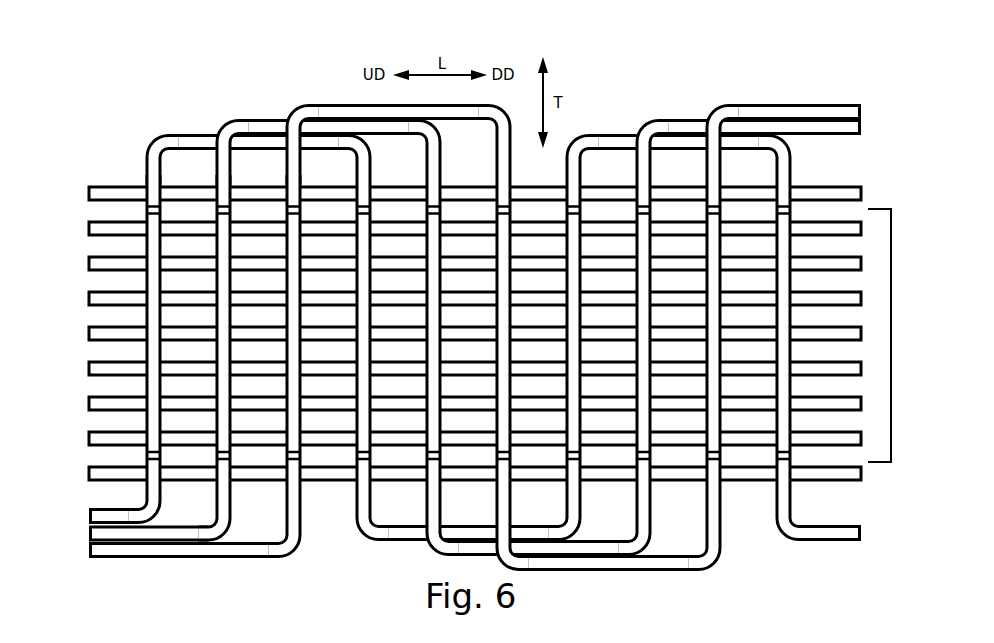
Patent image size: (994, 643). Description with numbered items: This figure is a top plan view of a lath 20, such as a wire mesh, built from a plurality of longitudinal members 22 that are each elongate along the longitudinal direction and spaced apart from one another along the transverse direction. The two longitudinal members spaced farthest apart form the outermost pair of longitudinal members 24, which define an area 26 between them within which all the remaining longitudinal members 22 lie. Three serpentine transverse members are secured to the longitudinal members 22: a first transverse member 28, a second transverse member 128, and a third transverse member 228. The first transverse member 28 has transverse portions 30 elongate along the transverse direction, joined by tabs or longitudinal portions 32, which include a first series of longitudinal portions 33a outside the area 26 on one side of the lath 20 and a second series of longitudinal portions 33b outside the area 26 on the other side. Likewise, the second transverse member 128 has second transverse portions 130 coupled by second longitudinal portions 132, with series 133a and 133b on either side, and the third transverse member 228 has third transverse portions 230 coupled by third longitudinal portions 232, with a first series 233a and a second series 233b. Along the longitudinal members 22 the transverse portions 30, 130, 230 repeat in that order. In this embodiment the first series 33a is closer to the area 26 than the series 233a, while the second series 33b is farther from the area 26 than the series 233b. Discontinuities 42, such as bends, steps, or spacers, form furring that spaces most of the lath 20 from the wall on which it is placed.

The lath 20 is at (836, 88).
The longitudinal members 22 is at (89, 194).
The outermost pair of longitudinal members 24 is at (845, 187).
The area 26 is at (891, 315).
The transverse member 28 is at (76, 516).
The transverse portions 30 is at (147, 382).
The longitudinal portions 32 is at (190, 142).
The first series of longitudinal portions 33a is at (200, 142).
The second series of longitudinal portions 33b is at (525, 533).
The discontinuity 42 is at (293, 462).
The second transverse member 128 is at (76, 534).
The second plurality of transverse portions 130 is at (217, 311).
The second plurality of longitudinal portions 132 is at (265, 127).
The first series of longitudinal portions of the second transverse member 133a is at (273, 127).
The second series of longitudinal portions of the second transverse member 133b is at (572, 545).
The third transverse member 228 is at (76, 550).
The third plurality of transverse portions 230 is at (287, 241).
The third plurality of longitudinal portions 232 is at (342, 112).
The first series of longitudinal portions of the third plurality 233a is at (352, 112).
The second series of longitudinal portions of the third plurality 233b is at (665, 563).